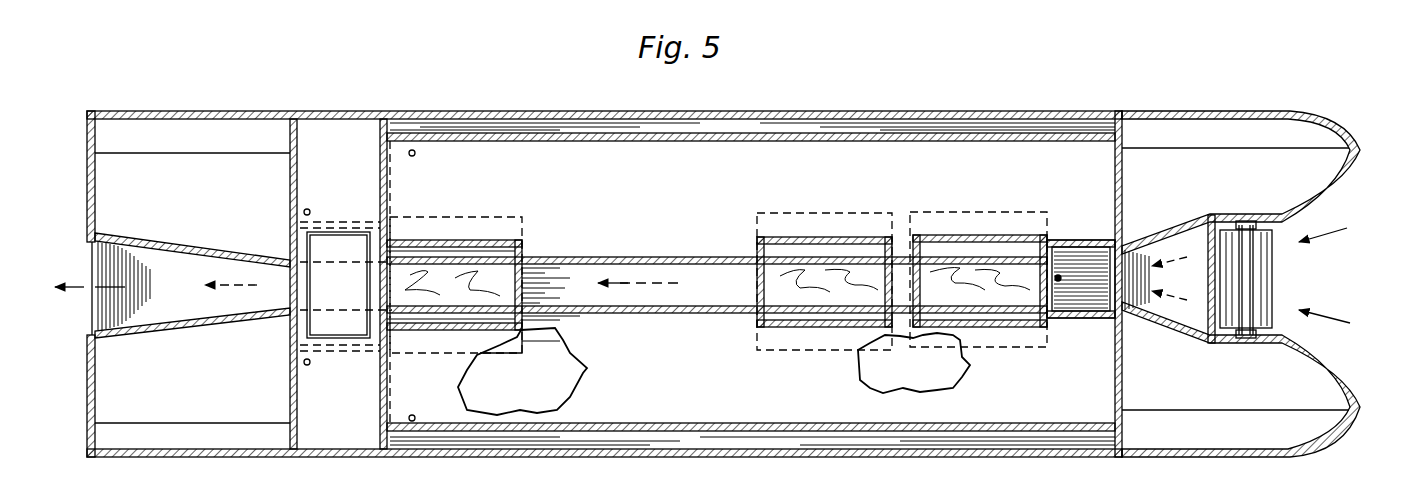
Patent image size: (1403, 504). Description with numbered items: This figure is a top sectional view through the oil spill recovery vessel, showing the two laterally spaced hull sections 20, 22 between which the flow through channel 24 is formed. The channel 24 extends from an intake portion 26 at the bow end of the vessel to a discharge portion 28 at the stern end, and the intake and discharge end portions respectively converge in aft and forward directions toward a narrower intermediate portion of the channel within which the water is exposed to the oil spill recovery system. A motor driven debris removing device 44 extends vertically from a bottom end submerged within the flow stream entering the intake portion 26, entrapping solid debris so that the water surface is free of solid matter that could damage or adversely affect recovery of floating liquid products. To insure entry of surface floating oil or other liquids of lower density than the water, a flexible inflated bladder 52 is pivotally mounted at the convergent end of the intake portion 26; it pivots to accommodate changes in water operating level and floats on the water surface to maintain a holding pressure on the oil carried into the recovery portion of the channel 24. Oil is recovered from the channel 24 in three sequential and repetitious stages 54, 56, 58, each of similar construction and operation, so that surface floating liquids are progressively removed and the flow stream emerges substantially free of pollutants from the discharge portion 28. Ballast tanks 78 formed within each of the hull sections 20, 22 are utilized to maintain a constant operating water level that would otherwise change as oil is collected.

The hull section 20 is at (1340, 368).
The hull section 22 is at (1293, 112).
The flow through channel 24 is at (715, 272).
The intake portion 26 is at (1348, 295).
The discharge portion 28 is at (192, 270).
The motor driven debris removing device 44 is at (1277, 262).
The flexible inflated bladder 52 is at (1086, 262).
The oil recovery stage 54 is at (1015, 333).
The oil recovery stage 56 is at (805, 333).
The oil recovery stage 58 is at (486, 238).
The ballast tank 78 is at (935, 128).